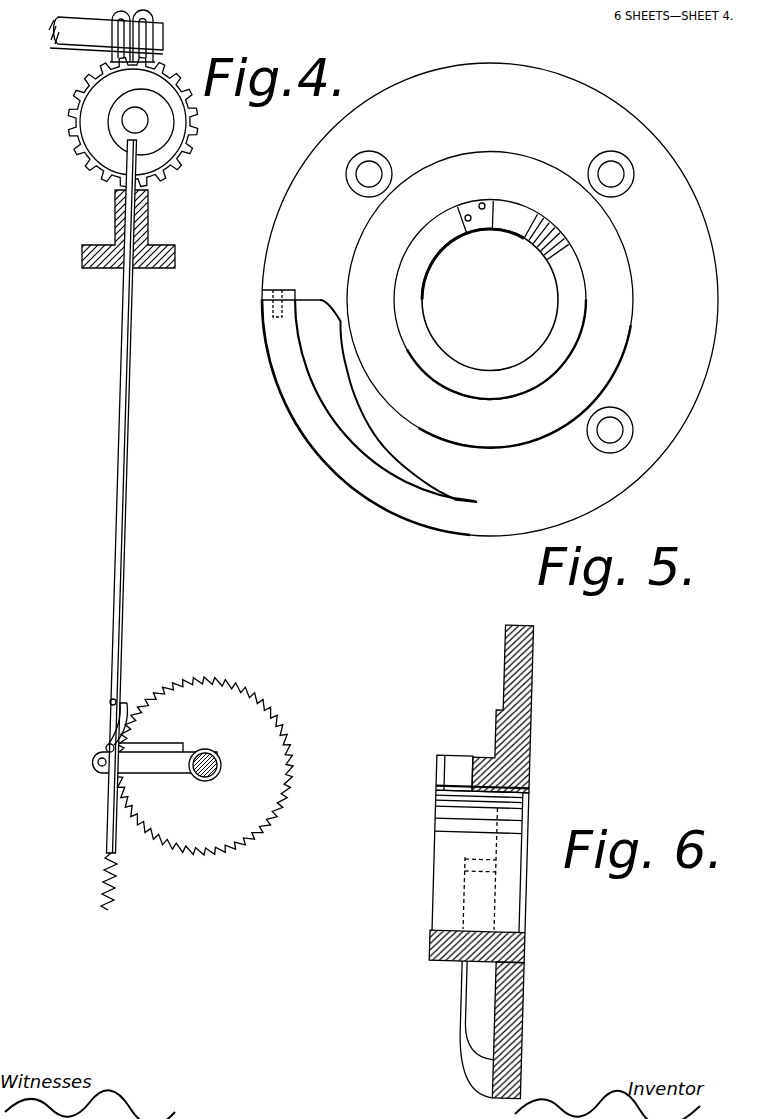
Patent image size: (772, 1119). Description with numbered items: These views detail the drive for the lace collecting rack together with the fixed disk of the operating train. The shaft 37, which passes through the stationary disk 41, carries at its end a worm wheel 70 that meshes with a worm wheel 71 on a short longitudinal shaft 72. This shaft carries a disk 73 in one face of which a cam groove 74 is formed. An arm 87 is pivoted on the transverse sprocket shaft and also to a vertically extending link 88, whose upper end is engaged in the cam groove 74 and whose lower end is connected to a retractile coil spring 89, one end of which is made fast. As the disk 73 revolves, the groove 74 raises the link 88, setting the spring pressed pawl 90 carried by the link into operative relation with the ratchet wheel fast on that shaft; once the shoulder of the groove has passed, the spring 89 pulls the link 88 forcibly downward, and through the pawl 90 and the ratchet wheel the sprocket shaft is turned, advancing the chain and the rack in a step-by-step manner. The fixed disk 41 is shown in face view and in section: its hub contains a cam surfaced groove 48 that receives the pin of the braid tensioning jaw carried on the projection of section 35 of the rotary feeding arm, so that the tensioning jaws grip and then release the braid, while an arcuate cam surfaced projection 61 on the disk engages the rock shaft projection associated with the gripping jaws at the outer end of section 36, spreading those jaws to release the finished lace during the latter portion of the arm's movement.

In FIG. 4, the section 35 is at (218, 757).
In FIG. 4, the section 36 is at (263, 803).
In FIG. 4, the shaft 37 is at (50, 52).
In FIG. 5, the stationary disk 41 is at (490, 527).
In FIG. 6, the stationary disk 41 is at (520, 712).
In FIG. 5, the cam surfaced groove 48 is at (563, 263).
In FIG. 6, the cam surfaced groove 48 is at (472, 777).
In FIG. 5, the arcuate cam surfaced projection 61 is at (370, 445).
In FIG. 6, the arcuate cam surfaced projection 61 is at (468, 1023).
In FIG. 4, the worm wheel 70 is at (158, 24).
In FIG. 4, the worm wheel 71 is at (192, 113).
In FIG. 4, the short longitudinal shaft 72 is at (130, 122).
In FIG. 4, the disk 73 is at (100, 117).
In FIG. 4, the cam groove 74 is at (157, 142).
In FIG. 4, the arm 87 is at (163, 768).
In FIG. 4, the link 88 is at (125, 485).
In FIG. 4, the retractile coil spring 89 is at (112, 875).
In FIG. 4, the spring pressed pawl 90 is at (130, 707).